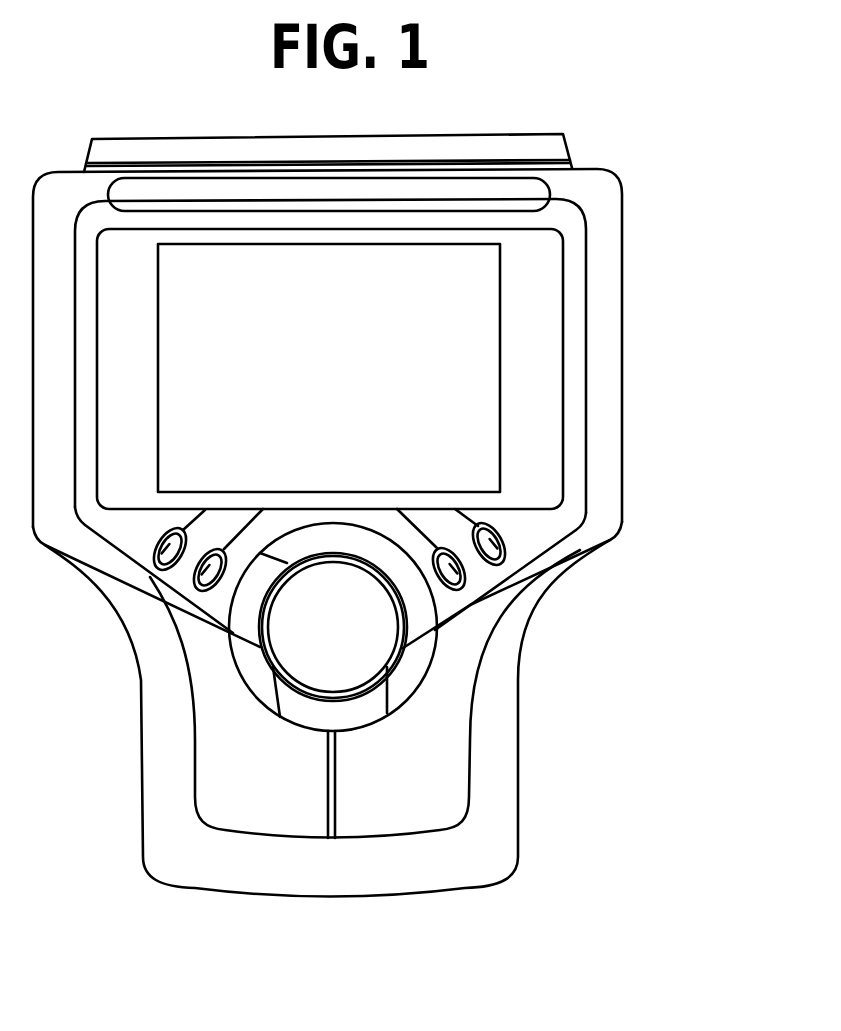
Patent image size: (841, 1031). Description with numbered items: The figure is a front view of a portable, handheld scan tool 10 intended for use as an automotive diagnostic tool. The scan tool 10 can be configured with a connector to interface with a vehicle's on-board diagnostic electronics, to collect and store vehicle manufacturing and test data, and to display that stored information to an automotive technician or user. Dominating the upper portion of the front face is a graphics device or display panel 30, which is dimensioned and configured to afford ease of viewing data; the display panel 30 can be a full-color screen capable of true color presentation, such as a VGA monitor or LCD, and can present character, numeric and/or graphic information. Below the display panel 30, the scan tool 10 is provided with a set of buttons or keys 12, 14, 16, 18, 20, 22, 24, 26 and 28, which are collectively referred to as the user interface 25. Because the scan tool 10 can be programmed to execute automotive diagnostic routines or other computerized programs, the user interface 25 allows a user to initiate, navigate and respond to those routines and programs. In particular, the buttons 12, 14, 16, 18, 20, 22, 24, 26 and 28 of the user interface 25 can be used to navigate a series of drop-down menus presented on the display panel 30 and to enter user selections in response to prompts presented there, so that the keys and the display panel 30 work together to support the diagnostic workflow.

The handheld scan tool 10 is at (607, 145).
The button 12 is at (158, 569).
The button 14 is at (199, 590).
The button 16 is at (363, 547).
The button 18 is at (502, 563).
The button 20 is at (340, 643).
The button 22 is at (245, 623).
The button 24 is at (425, 617).
The button 26 is at (405, 625).
The button 28 is at (317, 712).
The user interface 25 is at (665, 570).
The display panel 30 is at (458, 372).